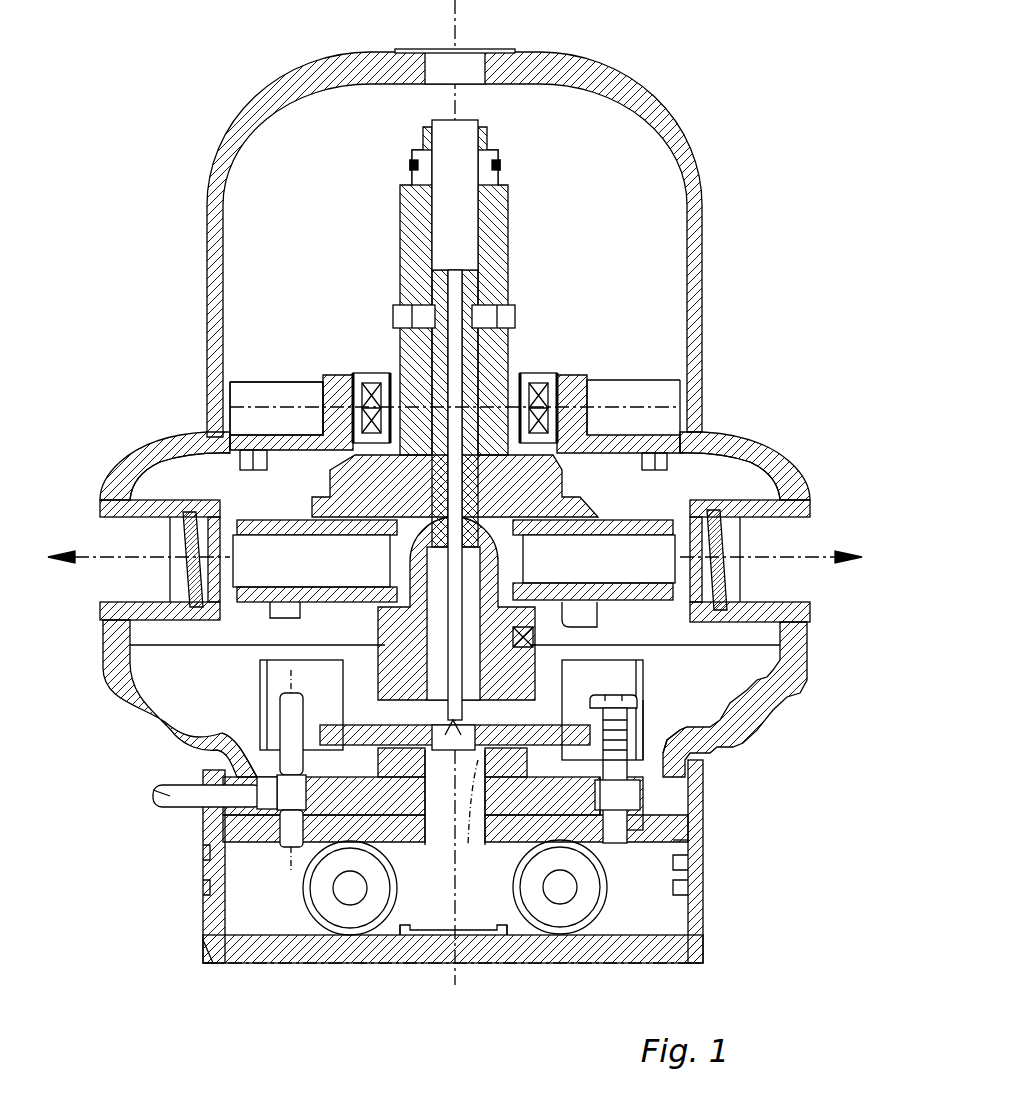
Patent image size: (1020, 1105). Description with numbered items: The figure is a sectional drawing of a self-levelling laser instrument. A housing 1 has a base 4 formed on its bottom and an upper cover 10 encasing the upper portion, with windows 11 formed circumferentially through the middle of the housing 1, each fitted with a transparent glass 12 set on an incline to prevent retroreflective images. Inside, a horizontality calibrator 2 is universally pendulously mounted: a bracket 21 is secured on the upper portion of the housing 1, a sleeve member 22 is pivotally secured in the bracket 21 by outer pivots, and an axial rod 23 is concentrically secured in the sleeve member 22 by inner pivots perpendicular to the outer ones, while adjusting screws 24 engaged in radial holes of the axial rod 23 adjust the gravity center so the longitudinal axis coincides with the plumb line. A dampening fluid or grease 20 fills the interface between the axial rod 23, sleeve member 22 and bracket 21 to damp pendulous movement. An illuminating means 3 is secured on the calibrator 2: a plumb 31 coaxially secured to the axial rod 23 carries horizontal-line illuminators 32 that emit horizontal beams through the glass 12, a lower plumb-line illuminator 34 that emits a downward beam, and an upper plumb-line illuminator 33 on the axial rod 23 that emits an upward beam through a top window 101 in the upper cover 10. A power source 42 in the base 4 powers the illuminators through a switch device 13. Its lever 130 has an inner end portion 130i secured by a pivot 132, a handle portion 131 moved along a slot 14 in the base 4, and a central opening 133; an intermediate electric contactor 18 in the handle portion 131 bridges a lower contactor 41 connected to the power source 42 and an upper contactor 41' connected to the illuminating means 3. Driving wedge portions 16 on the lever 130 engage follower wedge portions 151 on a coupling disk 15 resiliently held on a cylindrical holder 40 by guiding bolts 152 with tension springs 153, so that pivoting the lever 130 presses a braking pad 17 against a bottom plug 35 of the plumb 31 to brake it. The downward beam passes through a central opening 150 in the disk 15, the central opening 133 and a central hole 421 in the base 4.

The housing 1 is at (766, 443).
The horizontality calibrator 2 is at (555, 357).
The illuminating means 3 is at (633, 624).
The base 4 is at (708, 922).
The upper cover 10 is at (688, 168).
The window 11 is at (128, 585).
The transparent glass 12 is at (190, 547).
The switch device 13 is at (690, 870).
The slot 14 is at (262, 795).
The coupling disk 15 is at (615, 725).
The driving wedge portion 16 is at (437, 870).
The braking pad 17 is at (630, 792).
The intermediate electric contactor 18 is at (290, 797).
The dampening fluid or grease 20 is at (365, 376).
The bracket 21 is at (360, 378).
The sleeve member 22 is at (393, 318).
The axial rod 23 is at (508, 300).
The adjusting screw 24 is at (412, 290).
The plumb 31 is at (245, 448).
The horizontal-line illuminator 32 is at (200, 492).
The upper plumb-line illuminator 33 is at (445, 130).
The lower plumb-line illuminator 34 is at (425, 652).
The bottom plug 35 is at (700, 757).
The cylindrical holder 40 is at (600, 842).
The lower contactor 41 is at (241, 799).
The upper contactor 41' is at (185, 755).
The power source 42 is at (350, 905).
The top window 101 is at (505, 55).
The lever 130 is at (168, 805).
The inner end portion 130i is at (605, 812).
The handle portion 131 is at (165, 796).
The pivot 132 is at (680, 850).
The central opening 133 is at (478, 805).
The central opening 150 is at (462, 790).
The follower wedge portion 151 is at (690, 955).
The guiding bolt 152 is at (650, 752).
The tension spring 153 is at (632, 725).
The central hole 421 is at (405, 925).